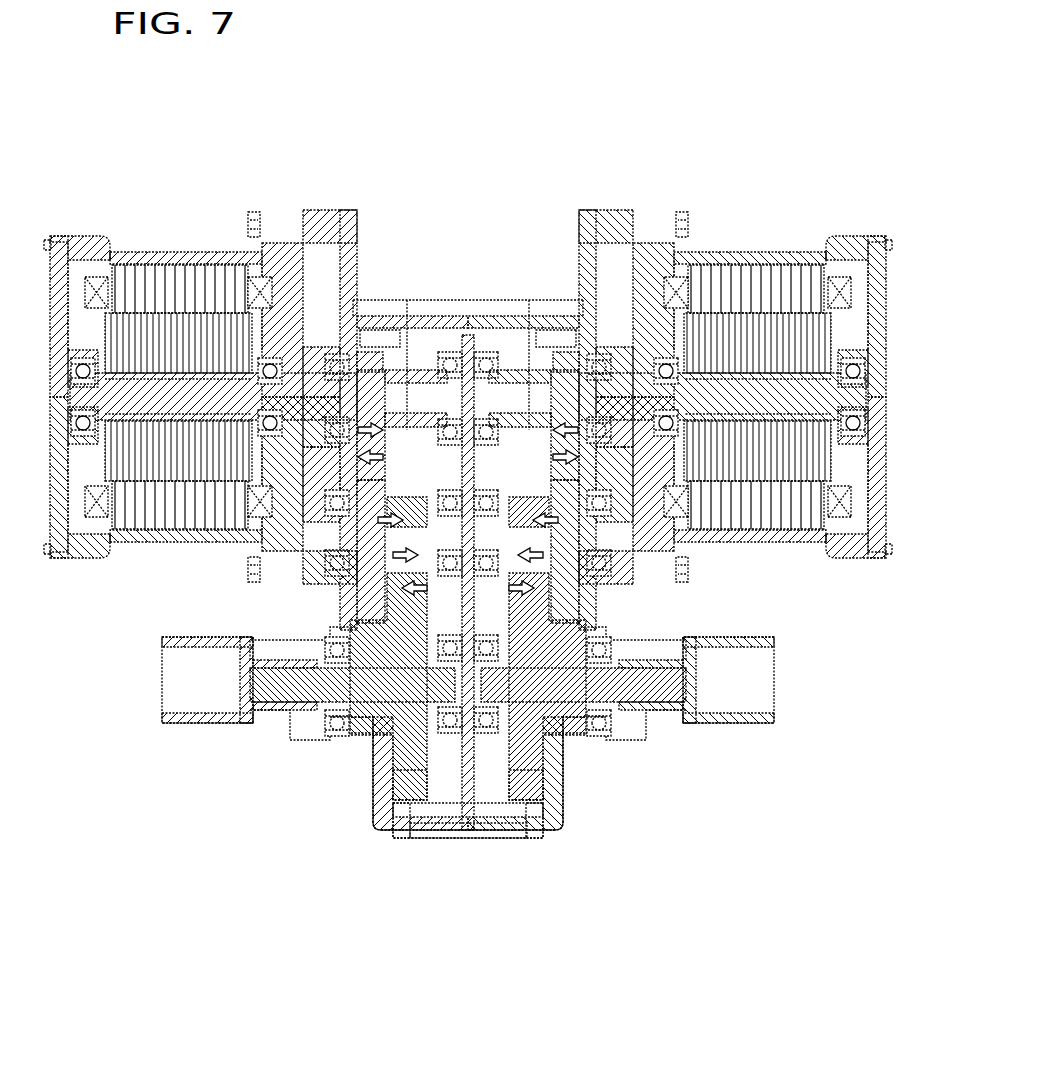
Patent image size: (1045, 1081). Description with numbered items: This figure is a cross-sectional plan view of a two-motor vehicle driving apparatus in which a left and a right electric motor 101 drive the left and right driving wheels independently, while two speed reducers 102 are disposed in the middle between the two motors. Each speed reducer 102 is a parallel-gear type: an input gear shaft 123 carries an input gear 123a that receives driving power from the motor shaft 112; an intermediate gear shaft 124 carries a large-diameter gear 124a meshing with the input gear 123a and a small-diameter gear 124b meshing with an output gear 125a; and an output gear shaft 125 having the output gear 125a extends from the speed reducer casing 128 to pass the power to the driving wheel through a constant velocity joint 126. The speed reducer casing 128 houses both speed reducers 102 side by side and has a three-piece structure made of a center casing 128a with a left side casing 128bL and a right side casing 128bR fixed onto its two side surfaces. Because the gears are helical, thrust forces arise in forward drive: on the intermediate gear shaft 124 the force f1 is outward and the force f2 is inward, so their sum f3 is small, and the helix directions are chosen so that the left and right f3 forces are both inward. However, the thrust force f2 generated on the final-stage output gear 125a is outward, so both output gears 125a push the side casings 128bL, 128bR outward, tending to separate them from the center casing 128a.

The electric motor 101 is at (82, 570).
The speed reducer 102 is at (377, 850).
The motor shaft 112 is at (193, 390).
The input gear shaft 123 is at (400, 364).
The input gear 123a is at (370, 350).
The intermediate gear shaft 124 is at (352, 566).
The large-diameter gear 124a is at (364, 630).
The small-diameter gear 124b is at (432, 478).
The output gear shaft 125 is at (382, 723).
The output gear 125a is at (410, 798).
The constant velocity joint 126 is at (157, 681).
The speed reducer casing 128 is at (543, 965).
The center casing 128a is at (483, 838).
The left side casing 128bL is at (393, 838).
The right side casing 128bR is at (537, 838).
The thrust directional force f1 is at (385, 456).
The thrust directional force f2 is at (468, 574).
The sum of thrust forces f3 is at (468, 494).